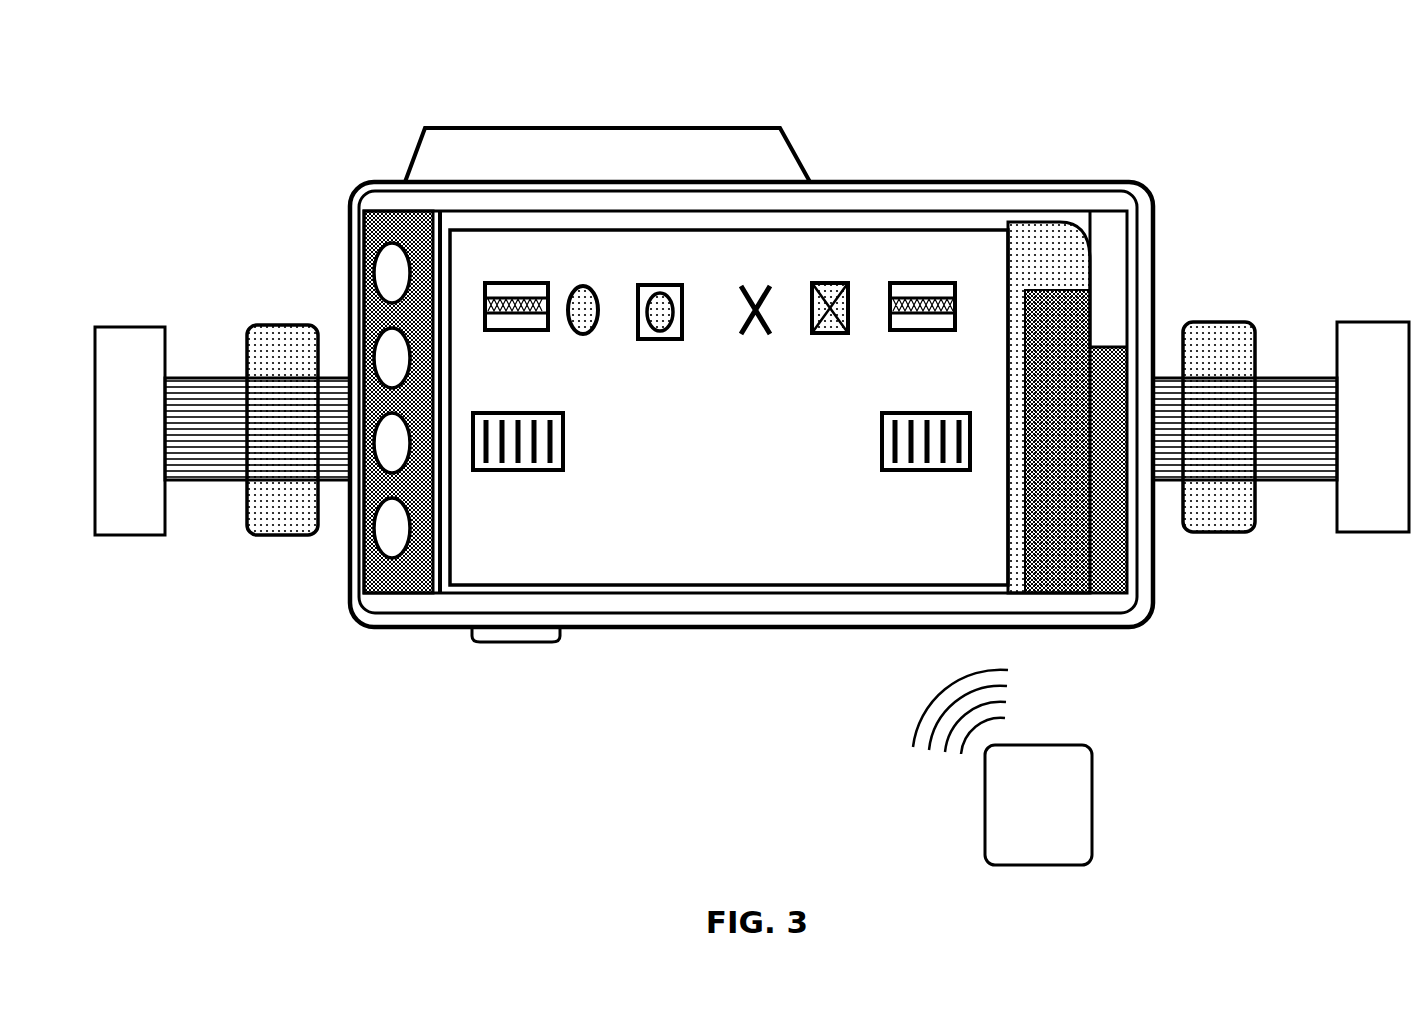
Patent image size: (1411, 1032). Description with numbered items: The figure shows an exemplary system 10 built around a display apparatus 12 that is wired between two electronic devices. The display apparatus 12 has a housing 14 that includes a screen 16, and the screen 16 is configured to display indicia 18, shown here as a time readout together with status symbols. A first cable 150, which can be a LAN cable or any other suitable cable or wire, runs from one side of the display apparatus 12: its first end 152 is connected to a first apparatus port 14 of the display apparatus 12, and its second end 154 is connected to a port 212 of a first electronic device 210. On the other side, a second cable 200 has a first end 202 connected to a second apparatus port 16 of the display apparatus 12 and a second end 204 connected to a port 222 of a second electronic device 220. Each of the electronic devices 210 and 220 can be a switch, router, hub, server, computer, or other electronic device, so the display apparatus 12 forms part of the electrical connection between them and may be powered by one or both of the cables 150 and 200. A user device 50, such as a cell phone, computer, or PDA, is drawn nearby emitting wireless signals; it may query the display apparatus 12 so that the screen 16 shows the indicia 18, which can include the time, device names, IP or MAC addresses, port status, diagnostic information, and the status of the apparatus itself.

The system 10 is at (1272, 100).
The display apparatus 12 is at (944, 174).
The housing 14 is at (1158, 378).
The screen 16 is at (815, 265).
The indicia 18 is at (572, 490).
The user device 50 is at (1092, 800).
The first cable 150 is at (1265, 365).
The first end 152 is at (1155, 483).
The second end 154 is at (1330, 377).
The second cable 200 is at (199, 368).
The first end 202 is at (345, 376).
The second end 204 is at (170, 482).
The first electronic device 210 is at (1355, 532).
The port 212 is at (1333, 483).
The second electronic device 220 is at (127, 537).
The port 222 is at (168, 492).